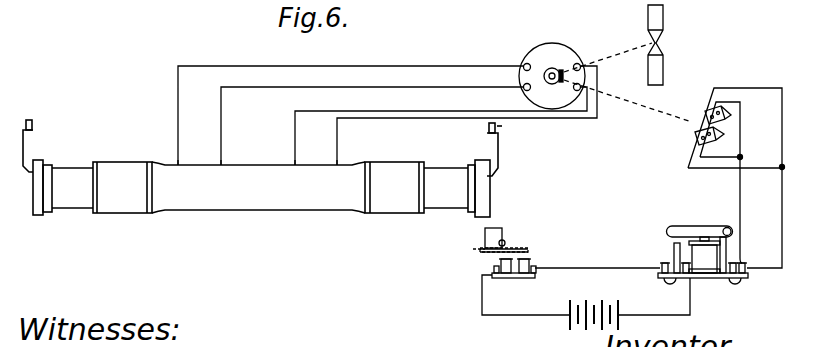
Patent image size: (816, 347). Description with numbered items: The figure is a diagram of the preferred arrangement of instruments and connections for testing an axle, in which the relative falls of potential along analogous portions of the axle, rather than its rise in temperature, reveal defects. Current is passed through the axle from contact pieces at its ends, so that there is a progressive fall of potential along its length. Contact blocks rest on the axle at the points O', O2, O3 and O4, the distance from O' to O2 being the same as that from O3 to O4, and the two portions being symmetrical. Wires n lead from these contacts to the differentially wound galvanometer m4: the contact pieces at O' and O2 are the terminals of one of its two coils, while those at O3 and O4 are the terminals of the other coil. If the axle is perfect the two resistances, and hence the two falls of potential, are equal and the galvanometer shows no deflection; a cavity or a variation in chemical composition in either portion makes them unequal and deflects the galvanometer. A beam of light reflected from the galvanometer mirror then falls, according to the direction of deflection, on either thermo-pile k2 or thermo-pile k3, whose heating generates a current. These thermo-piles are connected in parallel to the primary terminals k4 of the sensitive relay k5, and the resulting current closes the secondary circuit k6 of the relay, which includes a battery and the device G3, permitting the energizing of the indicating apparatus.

The differentially wound galvanometer m4 is at (605, 74).
The wires n is at (502, 126).
The contact point O' is at (180, 170).
The contact point O2 is at (223, 170).
The contact point O3 is at (298, 170).
The contact point O4 is at (341, 170).
The thermo-pile k2 is at (702, 108).
The thermo-pile k3 is at (697, 142).
The primary terminals k4 is at (740, 280).
The sensitive relay k5 is at (698, 280).
The secondary circuit k6 is at (597, 260).
The circuit breaker G3 is at (532, 262).